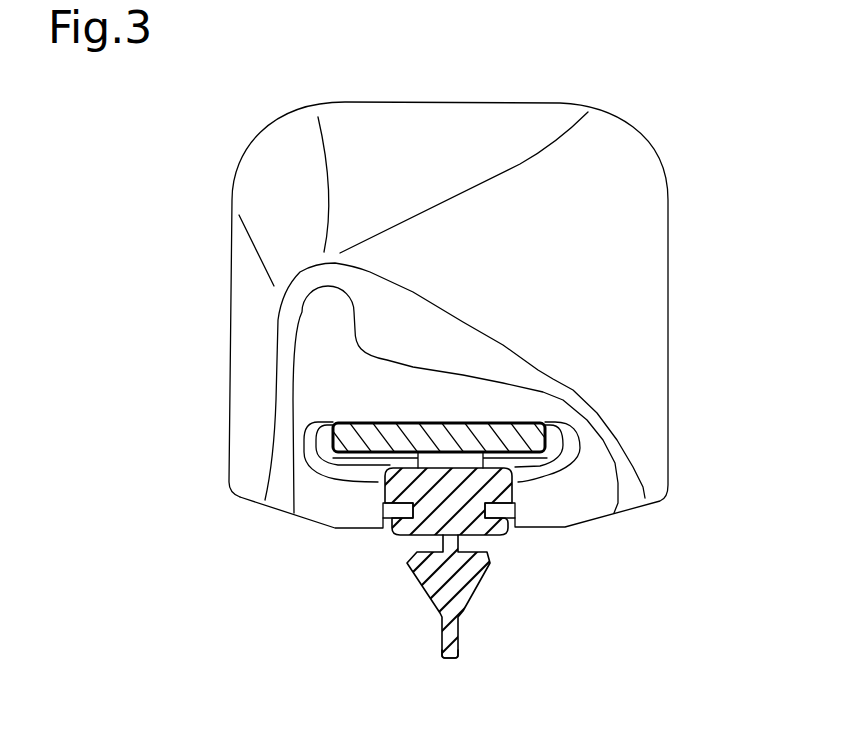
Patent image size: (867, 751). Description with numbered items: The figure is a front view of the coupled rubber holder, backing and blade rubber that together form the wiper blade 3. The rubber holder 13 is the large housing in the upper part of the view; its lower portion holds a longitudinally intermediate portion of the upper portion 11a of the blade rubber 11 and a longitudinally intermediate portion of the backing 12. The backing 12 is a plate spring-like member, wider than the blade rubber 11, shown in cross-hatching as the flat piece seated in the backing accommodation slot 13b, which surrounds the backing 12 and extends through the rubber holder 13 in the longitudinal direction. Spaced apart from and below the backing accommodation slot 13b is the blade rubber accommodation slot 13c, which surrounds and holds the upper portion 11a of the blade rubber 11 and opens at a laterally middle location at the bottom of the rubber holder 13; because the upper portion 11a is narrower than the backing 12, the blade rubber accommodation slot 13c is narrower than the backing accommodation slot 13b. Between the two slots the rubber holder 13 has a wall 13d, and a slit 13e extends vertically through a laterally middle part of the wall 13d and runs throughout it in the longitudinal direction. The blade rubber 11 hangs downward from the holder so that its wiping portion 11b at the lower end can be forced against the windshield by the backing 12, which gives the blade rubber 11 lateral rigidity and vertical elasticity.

The wiper blade 3 is at (213, 116).
The blade rubber 11 is at (471, 597).
The upper portion of the blade rubber 11a is at (513, 478).
The wiping portion of the blade rubber 11b is at (452, 662).
The backing 12 is at (441, 432).
The rubber holder 13 is at (668, 225).
The backing accommodation slot 13b is at (372, 428).
The blade rubber accommodation slot 13c is at (384, 502).
The wall 13d is at (535, 437).
The slit 13e is at (492, 462).